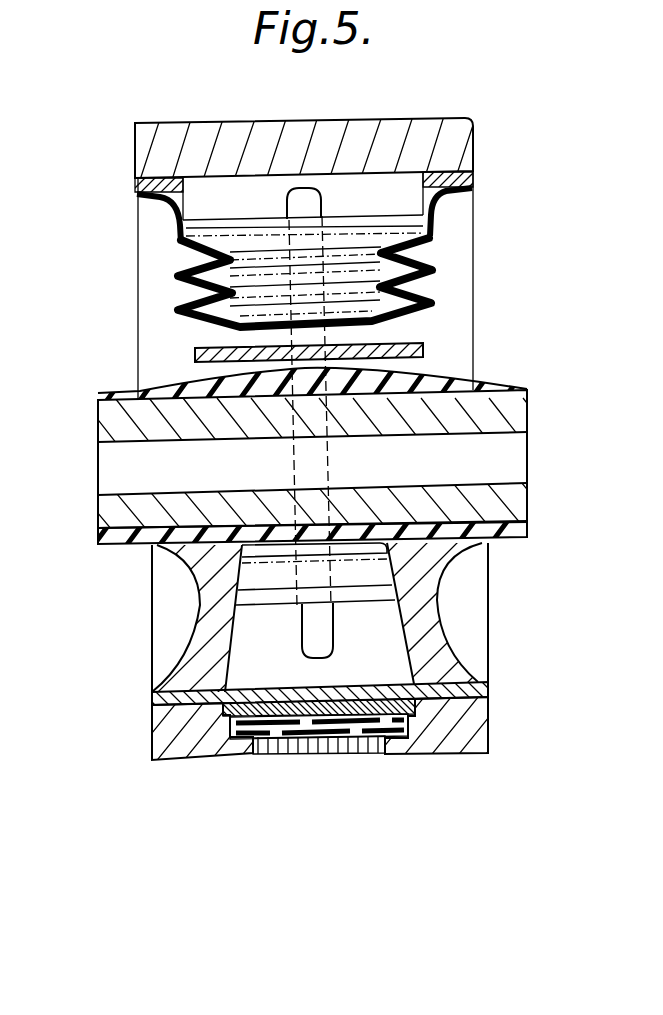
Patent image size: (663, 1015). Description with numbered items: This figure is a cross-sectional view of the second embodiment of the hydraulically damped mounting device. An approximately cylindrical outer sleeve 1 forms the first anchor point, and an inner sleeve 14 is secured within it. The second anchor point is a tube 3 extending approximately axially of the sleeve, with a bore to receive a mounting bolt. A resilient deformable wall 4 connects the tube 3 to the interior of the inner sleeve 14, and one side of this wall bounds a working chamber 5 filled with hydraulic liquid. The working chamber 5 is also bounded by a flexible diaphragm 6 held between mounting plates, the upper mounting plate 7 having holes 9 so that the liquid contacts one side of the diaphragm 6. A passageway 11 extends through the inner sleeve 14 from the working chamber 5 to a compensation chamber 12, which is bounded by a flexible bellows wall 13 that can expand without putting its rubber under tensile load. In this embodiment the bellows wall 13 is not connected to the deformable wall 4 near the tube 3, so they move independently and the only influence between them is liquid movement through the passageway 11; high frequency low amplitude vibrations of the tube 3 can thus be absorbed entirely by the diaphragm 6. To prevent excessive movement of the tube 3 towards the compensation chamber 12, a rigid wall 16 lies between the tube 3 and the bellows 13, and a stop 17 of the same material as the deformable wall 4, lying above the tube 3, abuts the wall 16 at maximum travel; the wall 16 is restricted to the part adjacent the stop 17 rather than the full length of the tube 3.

The outer sleeve 1 is at (380, 128).
The tube 3 is at (105, 424).
The resilient deformable wall 4 is at (205, 618).
The working chamber 5 is at (370, 655).
The flexible diaphragm 6 is at (322, 732).
The upper mounting plate 7 is at (417, 702).
The holes 9 is at (365, 748).
The passageway 11 is at (307, 198).
The compensation chamber 12 is at (393, 208).
The bellows wall 13 is at (177, 275).
The inner sleeve 14 is at (143, 186).
The rigid wall 16 is at (425, 349).
The stop 17 is at (203, 388).